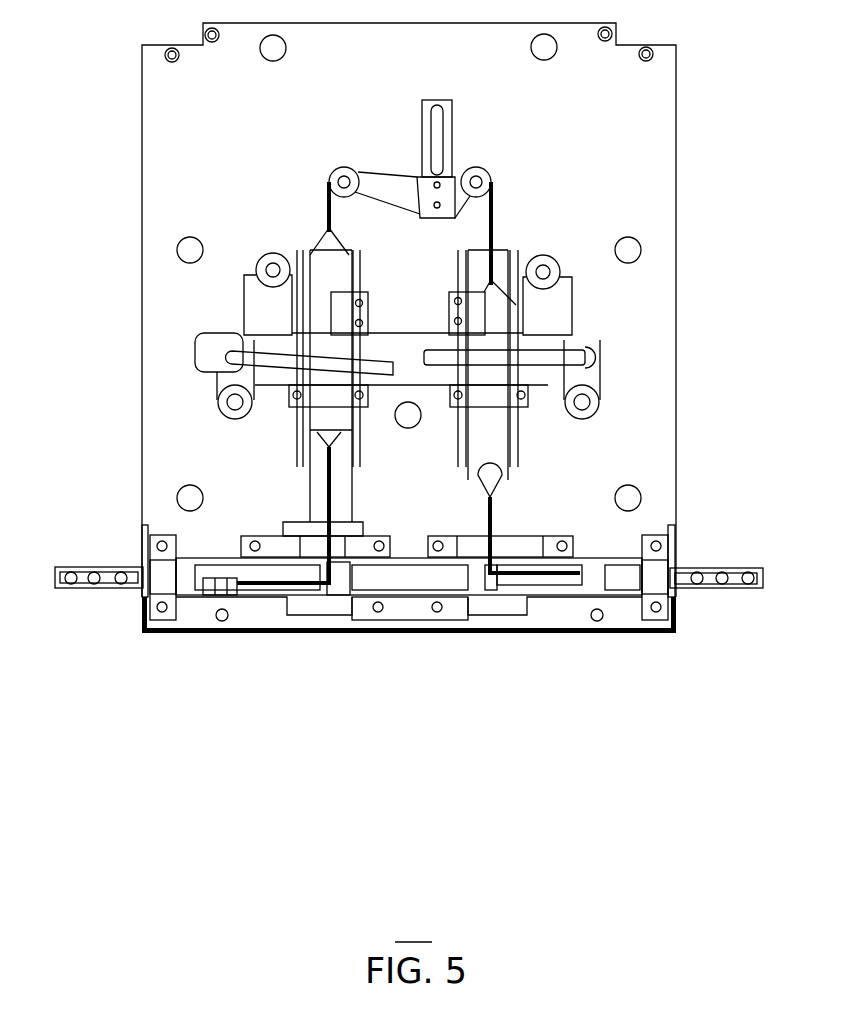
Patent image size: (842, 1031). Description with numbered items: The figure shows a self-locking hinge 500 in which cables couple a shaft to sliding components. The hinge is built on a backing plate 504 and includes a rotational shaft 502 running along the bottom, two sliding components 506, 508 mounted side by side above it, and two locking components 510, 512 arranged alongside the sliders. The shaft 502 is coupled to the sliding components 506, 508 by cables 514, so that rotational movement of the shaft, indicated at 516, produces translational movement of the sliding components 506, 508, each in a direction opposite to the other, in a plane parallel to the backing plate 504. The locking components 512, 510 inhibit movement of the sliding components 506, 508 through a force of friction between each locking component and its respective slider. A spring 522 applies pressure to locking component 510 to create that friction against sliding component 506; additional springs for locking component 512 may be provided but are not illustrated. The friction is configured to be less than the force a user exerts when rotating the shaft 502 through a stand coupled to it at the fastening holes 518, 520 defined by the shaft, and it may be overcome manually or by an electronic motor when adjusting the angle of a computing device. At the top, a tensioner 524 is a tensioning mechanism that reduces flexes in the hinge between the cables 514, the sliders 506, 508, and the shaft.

The self-locking hinge 500 is at (413, 930).
The rotational shaft 502 is at (142, 568).
The backing plate 504 is at (178, 172).
The sliding component 506 is at (323, 255).
The sliding component 508 is at (490, 435).
The locking component 510 is at (276, 360).
The locking component 512 is at (522, 355).
The cables 514 is at (329, 478).
The rotational movement 516 is at (776, 610).
The fastening hole 518 is at (92, 590).
The fastening hole 520 is at (728, 590).
The spring 522 is at (273, 340).
The tensioner 524 is at (390, 185).